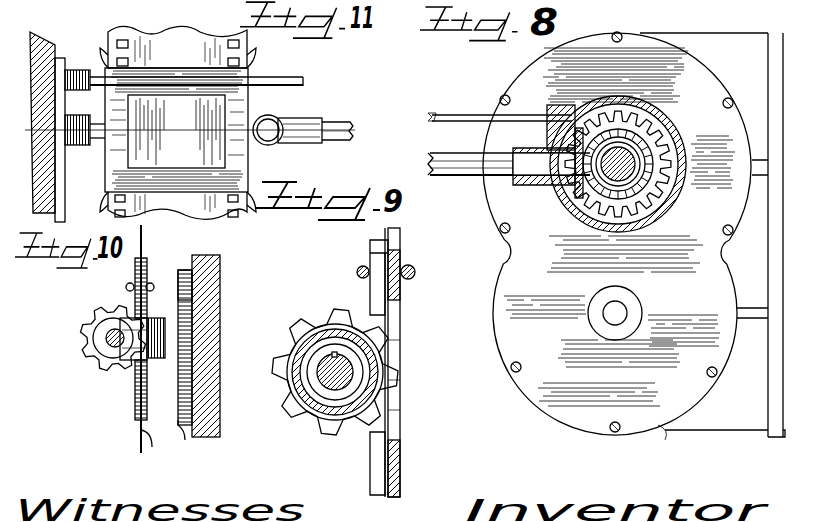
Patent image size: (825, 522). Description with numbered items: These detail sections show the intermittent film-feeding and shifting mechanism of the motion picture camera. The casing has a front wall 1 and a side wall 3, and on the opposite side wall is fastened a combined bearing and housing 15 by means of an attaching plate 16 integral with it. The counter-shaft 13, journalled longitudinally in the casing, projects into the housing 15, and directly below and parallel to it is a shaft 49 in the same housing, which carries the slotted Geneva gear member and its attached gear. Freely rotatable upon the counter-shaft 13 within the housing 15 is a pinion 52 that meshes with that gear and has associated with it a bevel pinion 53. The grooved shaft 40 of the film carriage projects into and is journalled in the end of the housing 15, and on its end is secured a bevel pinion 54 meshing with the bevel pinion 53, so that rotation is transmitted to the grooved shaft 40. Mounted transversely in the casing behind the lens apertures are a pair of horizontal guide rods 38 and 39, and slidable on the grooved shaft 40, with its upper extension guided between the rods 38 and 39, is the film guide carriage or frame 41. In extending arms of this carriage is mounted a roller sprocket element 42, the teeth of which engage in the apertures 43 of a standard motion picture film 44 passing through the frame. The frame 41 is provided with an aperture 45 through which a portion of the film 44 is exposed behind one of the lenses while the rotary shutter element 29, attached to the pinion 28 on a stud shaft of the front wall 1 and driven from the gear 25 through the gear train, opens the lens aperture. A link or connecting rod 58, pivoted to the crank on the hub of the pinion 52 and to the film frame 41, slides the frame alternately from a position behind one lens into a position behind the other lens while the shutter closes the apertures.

In FIG. 10, the front wall 1 is at (213, 328).
In FIG. 11, the side wall 3 is at (48, 52).
In FIG. 8, the counter-shaft 13 is at (578, 232).
In FIG. 8, the combined bearing and housing 15 is at (615, 335).
In FIG. 8, the attaching plate 16 is at (772, 276).
In FIG. 10, the gear 25 is at (193, 441).
In FIG. 10, the pinion 28 is at (192, 350).
In FIG. 10, the rotary shutter element 29 is at (190, 285).
In FIG. 10, the guide rod 38 is at (126, 287).
In FIG. 9, the guide rod 38 is at (357, 272).
In FIG. 8, the guide rod 38 is at (448, 114).
In FIG. 11, the guide rod 39 is at (300, 70).
In FIG. 10, the guide rod 39 is at (150, 290).
In FIG. 9, the guide rod 39 is at (438, 282).
In FIG. 11, the grooved shaft 40 is at (343, 133).
In FIG. 10, the grooved shaft 40 is at (114, 342).
In FIG. 9, the grooved shaft 40 is at (333, 388).
In FIG. 8, the grooved shaft 40 is at (462, 150).
In FIG. 11, the film guide carriage or frame 41 is at (248, 112).
In FIG. 10, the film guide carriage or frame 41 is at (130, 352).
In FIG. 10, the roller sprocket element 42 is at (92, 350).
In FIG. 9, the roller sprocket element 42 is at (300, 395).
In FIG. 11, the apertures 43 is at (128, 62).
In FIG. 11, the motion picture film 44 is at (187, 208).
In FIG. 10, the motion picture film 44 is at (153, 450).
In FIG. 11, the aperture 45 is at (165, 168).
In FIG. 9, the aperture 45 is at (395, 440).
In FIG. 8, the shaft 49 is at (614, 316).
In FIG. 8, the pinion 52 is at (590, 108).
In FIG. 8, the bevel pinion 53 is at (655, 160).
In FIG. 8, the bevel pinion 54 is at (600, 196).
In FIG. 11, the link or connecting rod 58 is at (305, 128).